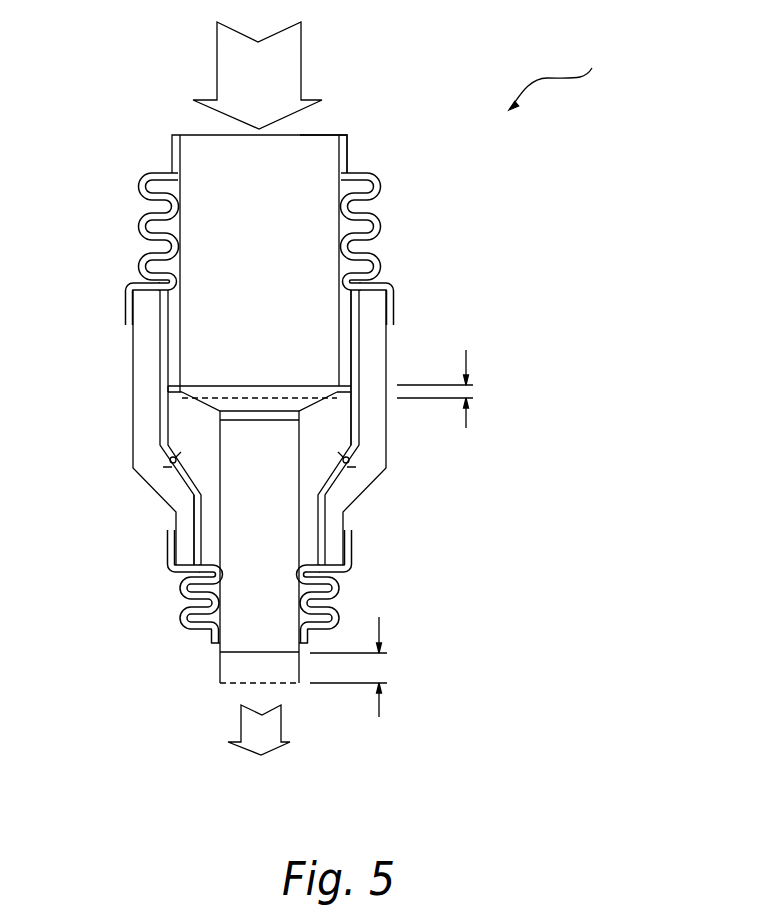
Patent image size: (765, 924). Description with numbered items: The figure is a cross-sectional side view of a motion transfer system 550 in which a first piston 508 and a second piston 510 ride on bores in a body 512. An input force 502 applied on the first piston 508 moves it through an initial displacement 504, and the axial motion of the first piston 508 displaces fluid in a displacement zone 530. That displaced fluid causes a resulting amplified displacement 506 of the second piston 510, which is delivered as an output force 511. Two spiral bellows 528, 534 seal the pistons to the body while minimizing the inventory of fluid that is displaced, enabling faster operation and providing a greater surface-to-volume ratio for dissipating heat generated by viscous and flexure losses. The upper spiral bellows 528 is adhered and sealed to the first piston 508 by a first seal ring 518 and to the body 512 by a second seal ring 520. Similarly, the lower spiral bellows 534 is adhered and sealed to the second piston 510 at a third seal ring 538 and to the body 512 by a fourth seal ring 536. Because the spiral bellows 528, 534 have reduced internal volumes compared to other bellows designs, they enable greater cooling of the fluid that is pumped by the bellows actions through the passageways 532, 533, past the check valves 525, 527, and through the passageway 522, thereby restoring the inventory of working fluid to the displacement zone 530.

The input force 502 is at (302, 58).
The motion transfer system 550 is at (561, 75).
The first piston 508 is at (203, 167).
The first seal ring 518 is at (352, 137).
The spiral bellows 528 is at (386, 213).
The second seal ring 520 is at (399, 283).
The body 512 is at (147, 351).
The passageway 522 is at (173, 385).
The displacement zone 530 is at (291, 410).
The initial displacement 504 is at (469, 422).
The second piston 510 is at (233, 461).
The passageway 532 is at (364, 447).
The check valve 527 is at (168, 462).
The check valve 525 is at (352, 464).
The passageway 533 is at (189, 498).
The fourth seal ring 536 is at (356, 547).
The spiral bellows 534 is at (344, 593).
The third seal ring 538 is at (211, 635).
The output force 511 is at (283, 723).
The amplified displacement 506 is at (384, 710).